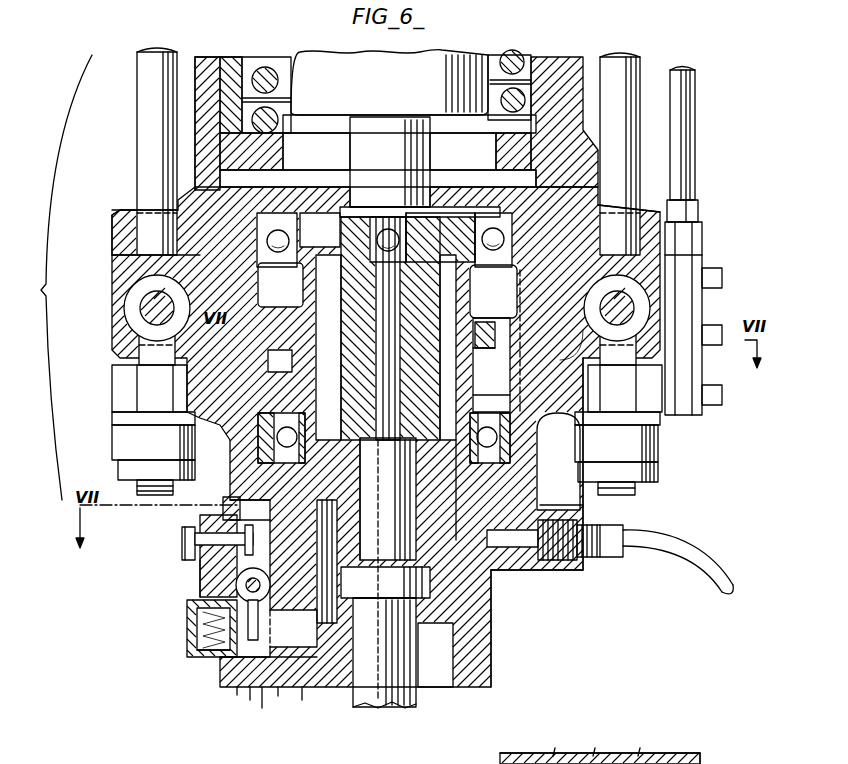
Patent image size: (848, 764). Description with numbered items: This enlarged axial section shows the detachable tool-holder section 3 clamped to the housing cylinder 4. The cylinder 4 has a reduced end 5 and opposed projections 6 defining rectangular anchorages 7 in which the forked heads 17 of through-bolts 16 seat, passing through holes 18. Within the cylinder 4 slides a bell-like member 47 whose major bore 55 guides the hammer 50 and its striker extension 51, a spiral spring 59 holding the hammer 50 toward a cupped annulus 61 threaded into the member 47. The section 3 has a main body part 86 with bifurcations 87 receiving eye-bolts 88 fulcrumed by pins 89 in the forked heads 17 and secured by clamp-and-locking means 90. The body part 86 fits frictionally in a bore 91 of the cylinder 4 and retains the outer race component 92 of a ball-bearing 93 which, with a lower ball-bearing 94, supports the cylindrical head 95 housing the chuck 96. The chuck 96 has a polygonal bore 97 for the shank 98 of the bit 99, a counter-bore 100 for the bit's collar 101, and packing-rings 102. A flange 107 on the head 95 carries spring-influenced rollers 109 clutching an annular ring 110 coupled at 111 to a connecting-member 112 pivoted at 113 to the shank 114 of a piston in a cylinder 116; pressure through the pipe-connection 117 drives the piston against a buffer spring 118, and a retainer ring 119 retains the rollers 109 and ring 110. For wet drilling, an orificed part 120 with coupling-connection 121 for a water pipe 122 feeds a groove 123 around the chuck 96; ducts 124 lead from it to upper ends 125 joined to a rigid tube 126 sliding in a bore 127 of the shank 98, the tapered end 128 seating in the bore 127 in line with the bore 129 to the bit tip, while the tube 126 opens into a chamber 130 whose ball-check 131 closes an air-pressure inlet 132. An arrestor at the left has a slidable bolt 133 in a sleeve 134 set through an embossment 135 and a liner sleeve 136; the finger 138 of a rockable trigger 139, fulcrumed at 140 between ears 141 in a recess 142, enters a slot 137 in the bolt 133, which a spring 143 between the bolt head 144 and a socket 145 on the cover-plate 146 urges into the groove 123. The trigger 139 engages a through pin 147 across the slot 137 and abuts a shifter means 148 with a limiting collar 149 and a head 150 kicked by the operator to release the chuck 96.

The tool-holder section 3 is at (47, 277).
The cylinder 4 is at (200, 56).
The reduced end 5 is at (520, 187).
The opposed projections 6 is at (114, 222).
The anchorages 7 is at (114, 290).
The through-bolts 16 is at (143, 141).
The forked heads 17 is at (114, 262).
The holes 18 is at (136, 240).
The bell-like member 47 is at (232, 57).
The hammer 50 is at (389, 82).
The striker extension 51 is at (352, 152).
The major bore 55 is at (254, 68).
The spiral spring 59 is at (513, 50).
The cupped annulus 61 is at (316, 151).
The main cylindrical body part 86 is at (582, 312).
The bifurcations 87 is at (112, 380).
The eye-bolts 88 is at (140, 348).
The pins 89 is at (150, 305).
The clamp-and-locking means 90 is at (120, 465).
The bore 91 is at (584, 332).
The outer race component 92 is at (493, 227).
The ball-bearing 93 is at (280, 229).
The lower ball-bearing 94 is at (497, 437).
The cylindrical head 95 is at (493, 291).
The chuck 96 is at (456, 500).
The polygonal section bore 97 is at (480, 350).
The shank 98 is at (371, 499).
The tool or bit 99 is at (400, 705).
The counter-bore 100 is at (435, 655).
The collar 101 is at (385, 582).
The packing-rings 102 is at (495, 572).
The flange 107 is at (280, 285).
The spring-influenced rollers 109 is at (540, 341).
The annular ring 110 is at (278, 367).
The coupling 111 is at (534, 755).
The connecting-member 112 is at (564, 755).
The pivot 113 is at (566, 743).
The shank 114 is at (602, 743).
The cylinder 116 is at (646, 743).
The pipe-connection 117 is at (690, 125).
The buffer spring 118 is at (528, 756).
The retainer ring 119 is at (496, 368).
The orificed part 120 is at (578, 512).
The coupling-connection 121 is at (600, 558).
The flexible water supply pipe 122 is at (700, 560).
The circumferential groove 123 is at (230, 510).
The ducts 124 is at (505, 470).
The upper ends 125 is at (432, 240).
The tube 126 is at (281, 427).
The bore 127 is at (494, 400).
The tapered end 128 is at (390, 458).
The aligned bore 129 is at (385, 692).
The concentric chamber 130 is at (322, 215).
The ball-check 131 is at (388, 230).
The air-pressure inlet 132 is at (391, 236).
The slidable-bolt 133 is at (303, 573).
The sleeve 134 is at (302, 700).
The embossment 135 is at (262, 708).
The liner sleeve 136 is at (365, 600).
The slot 137 is at (278, 696).
The finger 138 is at (250, 700).
The rockable-trigger 139 is at (232, 558).
The fulcrum 140 is at (215, 598).
The spaced ears 141 is at (190, 612).
The recess 142 is at (190, 535).
The spring 143 is at (188, 627).
The bolt head 144 is at (188, 645).
The socket 145 is at (188, 665).
The cover-plate 146 is at (226, 672).
The through pin 147 is at (237, 692).
The shifter means 148 is at (200, 557).
The movement limiting collar 149 is at (196, 575).
The head 150 is at (200, 540).